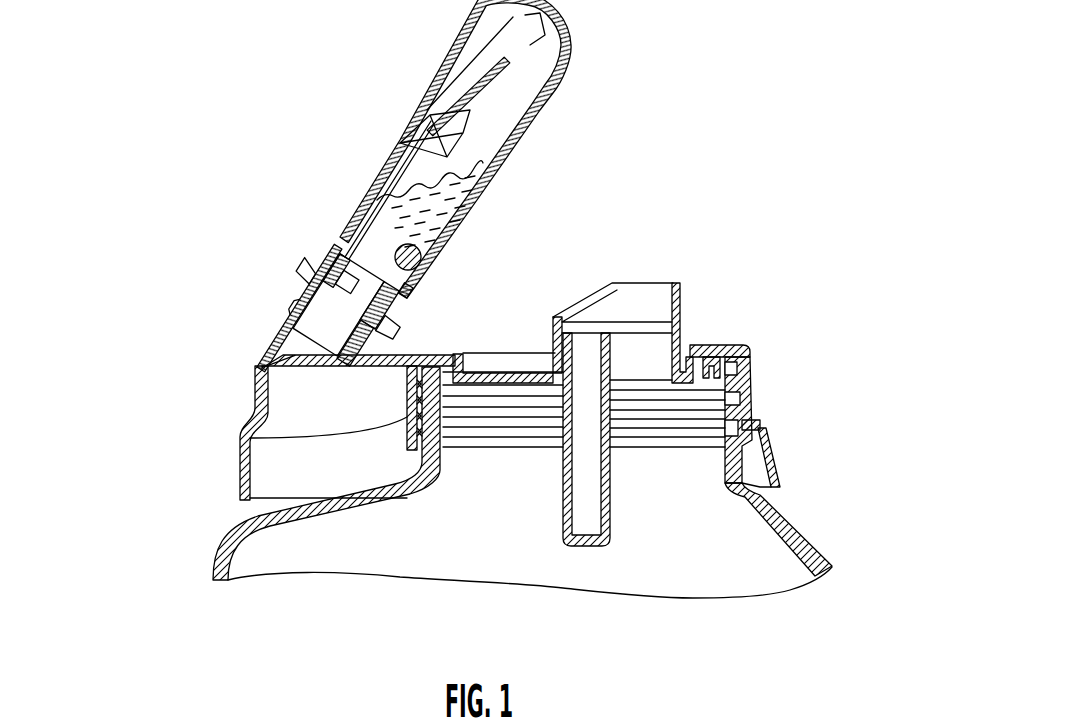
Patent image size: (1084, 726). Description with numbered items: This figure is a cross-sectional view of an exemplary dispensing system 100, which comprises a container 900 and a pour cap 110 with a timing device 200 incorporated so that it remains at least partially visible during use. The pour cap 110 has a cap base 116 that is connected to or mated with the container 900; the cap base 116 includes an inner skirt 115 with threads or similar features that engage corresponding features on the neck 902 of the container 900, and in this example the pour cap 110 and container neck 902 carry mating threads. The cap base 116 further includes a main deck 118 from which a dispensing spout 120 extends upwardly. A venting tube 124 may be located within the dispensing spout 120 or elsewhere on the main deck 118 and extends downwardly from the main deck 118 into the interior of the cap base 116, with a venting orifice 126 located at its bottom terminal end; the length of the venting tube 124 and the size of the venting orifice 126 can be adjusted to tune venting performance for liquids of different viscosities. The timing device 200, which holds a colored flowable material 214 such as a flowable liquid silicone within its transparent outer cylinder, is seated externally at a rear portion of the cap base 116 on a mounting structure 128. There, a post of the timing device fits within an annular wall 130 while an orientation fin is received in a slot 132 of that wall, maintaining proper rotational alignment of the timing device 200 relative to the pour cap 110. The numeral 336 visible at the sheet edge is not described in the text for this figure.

The dispensing system 100 is at (195, 188).
The pour cap 110 is at (752, 373).
The inner skirt 115 is at (240, 438).
The cap base 116 is at (255, 410).
The main deck 118 is at (513, 372).
The dispensing spout 120 is at (680, 297).
The venting tube 124 is at (610, 487).
The venting orifice 126 is at (588, 546).
The mounting structure 128 is at (284, 332).
The annular wall 130 is at (365, 323).
The slot 132 is at (305, 306).
The timing device 200 is at (540, 120).
The flowable material 214 is at (387, 190).
The container 900 is at (214, 543).
The neck 902 is at (440, 455).
The numeral of adjacent figure 336 is at (727, 716).